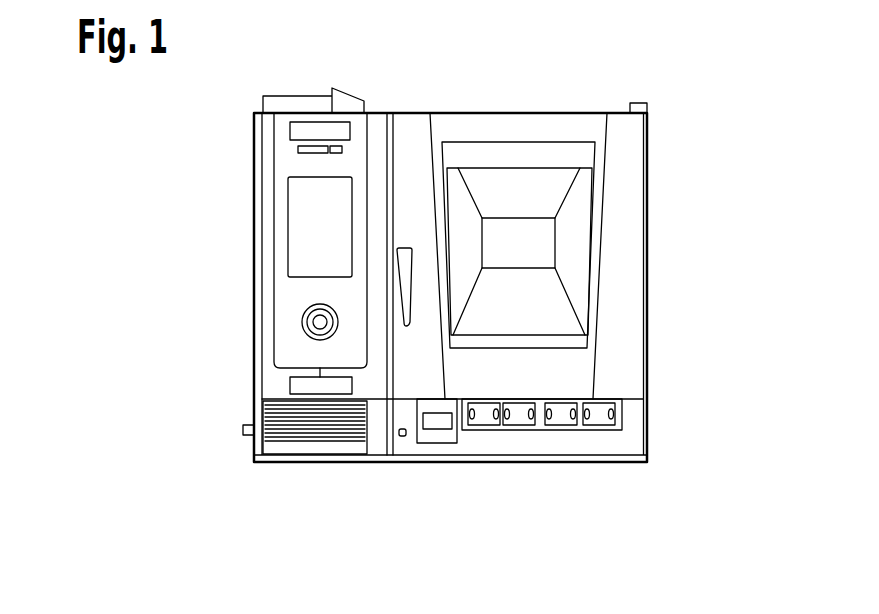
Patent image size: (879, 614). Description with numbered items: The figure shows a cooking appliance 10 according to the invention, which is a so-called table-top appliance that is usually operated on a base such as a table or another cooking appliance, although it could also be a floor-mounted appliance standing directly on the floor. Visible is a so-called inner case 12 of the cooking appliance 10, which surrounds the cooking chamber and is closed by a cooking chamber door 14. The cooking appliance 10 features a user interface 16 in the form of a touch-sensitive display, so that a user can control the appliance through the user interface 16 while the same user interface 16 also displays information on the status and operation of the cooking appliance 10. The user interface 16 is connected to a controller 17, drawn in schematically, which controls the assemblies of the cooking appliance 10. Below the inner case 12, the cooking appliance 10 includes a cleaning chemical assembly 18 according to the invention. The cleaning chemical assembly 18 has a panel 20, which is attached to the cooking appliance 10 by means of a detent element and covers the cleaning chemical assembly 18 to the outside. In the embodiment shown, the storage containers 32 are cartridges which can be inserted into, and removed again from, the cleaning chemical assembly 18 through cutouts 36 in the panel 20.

The cooking appliance 10 is at (200, 152).
The inner case 12 is at (548, 168).
The cooking chamber door 14 is at (632, 251).
The user interface 16 is at (300, 242).
The controller 17 is at (300, 387).
The cleaning chemical assembly 18 is at (672, 410).
The panel 20 is at (407, 447).
The storage containers 32 is at (516, 419).
The cutouts 36 is at (603, 446).